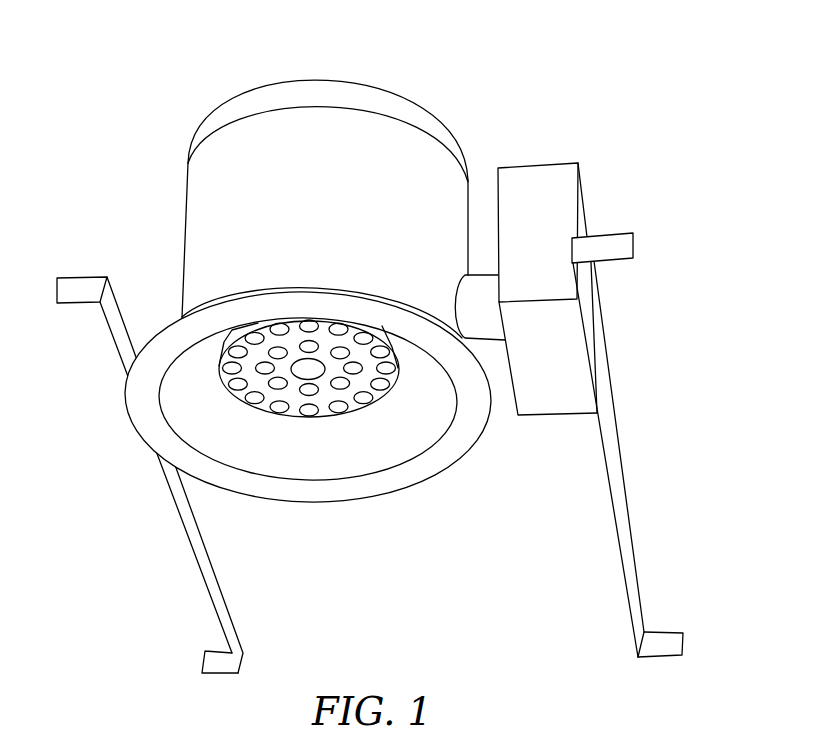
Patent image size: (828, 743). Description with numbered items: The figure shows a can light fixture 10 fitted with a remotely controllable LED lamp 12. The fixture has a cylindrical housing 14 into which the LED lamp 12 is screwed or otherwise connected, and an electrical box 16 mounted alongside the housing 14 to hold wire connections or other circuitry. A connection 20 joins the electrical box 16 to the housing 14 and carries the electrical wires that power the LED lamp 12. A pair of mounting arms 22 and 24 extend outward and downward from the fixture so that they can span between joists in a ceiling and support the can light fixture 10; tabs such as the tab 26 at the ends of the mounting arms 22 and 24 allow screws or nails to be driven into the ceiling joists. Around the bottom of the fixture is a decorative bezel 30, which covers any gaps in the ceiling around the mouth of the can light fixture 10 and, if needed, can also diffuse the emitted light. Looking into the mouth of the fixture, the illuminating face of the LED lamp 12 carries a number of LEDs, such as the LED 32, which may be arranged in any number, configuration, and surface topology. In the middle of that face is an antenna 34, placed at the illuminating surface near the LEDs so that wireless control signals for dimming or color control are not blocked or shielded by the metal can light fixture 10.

The can light fixture 10 is at (367, 340).
The LED lamp 12 is at (238, 402).
The housing 14 is at (183, 214).
The electrical box 16 is at (542, 167).
The connection 20 is at (490, 340).
The mounting arm 22 is at (177, 503).
The mounting arm 24 is at (623, 482).
The tab 26 is at (82, 276).
The decorative bezel 30 is at (127, 412).
The LED 32 is at (280, 408).
The antenna 34 is at (317, 380).